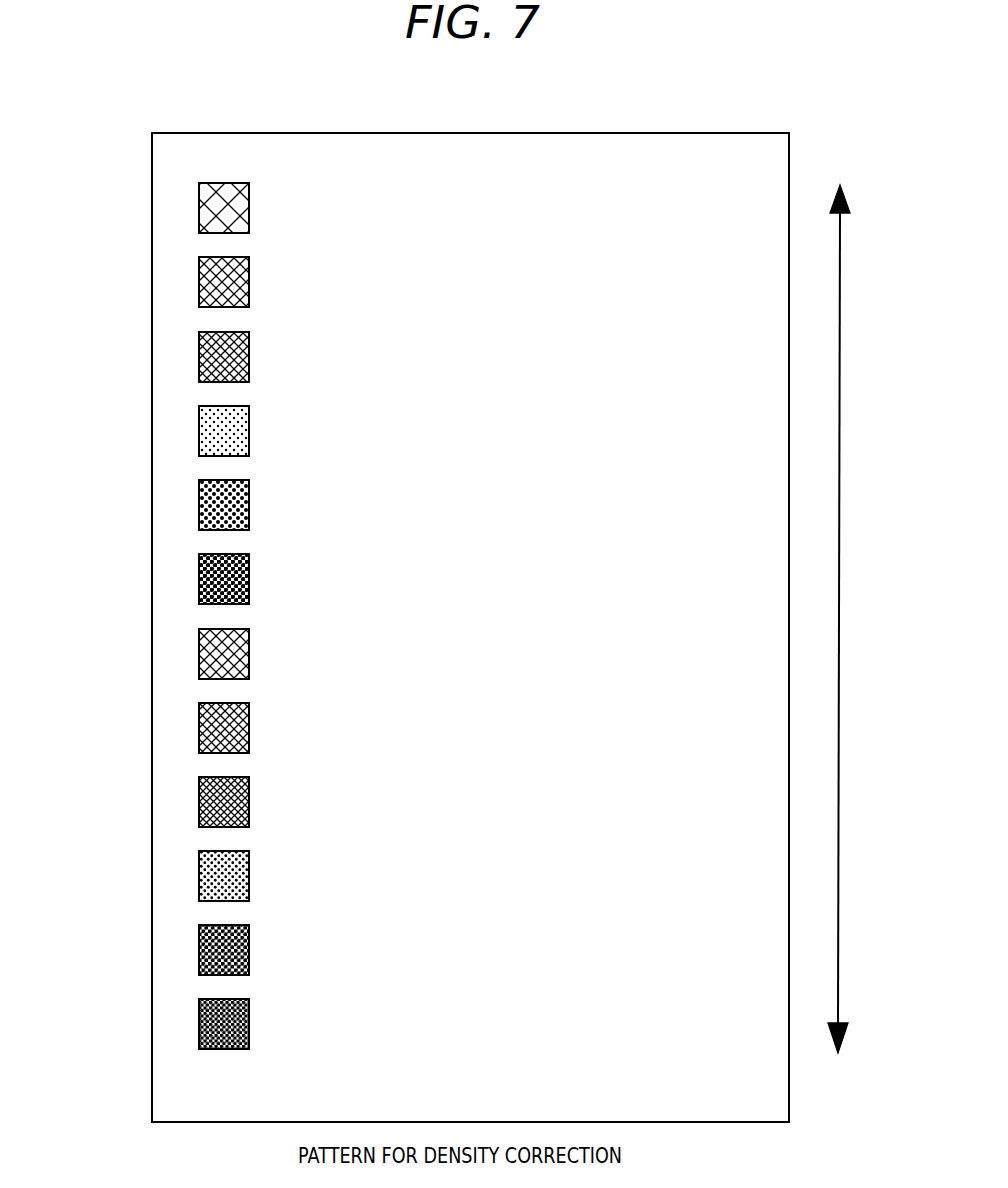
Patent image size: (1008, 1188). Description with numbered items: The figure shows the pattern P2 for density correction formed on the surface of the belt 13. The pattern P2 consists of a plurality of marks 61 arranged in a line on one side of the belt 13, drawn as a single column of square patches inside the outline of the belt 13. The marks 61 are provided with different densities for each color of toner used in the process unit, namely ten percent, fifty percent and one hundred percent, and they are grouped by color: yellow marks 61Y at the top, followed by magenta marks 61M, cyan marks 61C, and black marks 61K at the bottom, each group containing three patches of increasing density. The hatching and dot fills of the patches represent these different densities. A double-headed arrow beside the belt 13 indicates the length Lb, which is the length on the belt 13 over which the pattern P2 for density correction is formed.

The marks 61 is at (150, 616).
The yellow marks 61Y is at (199, 208).
The magenta marks 61M is at (199, 431).
The cyan marks 61C is at (199, 654).
The black marks 61K is at (199, 876).
The pattern for density correction P2 is at (357, 152).
The belt 13 is at (531, 133).
The length Lb is at (855, 619).